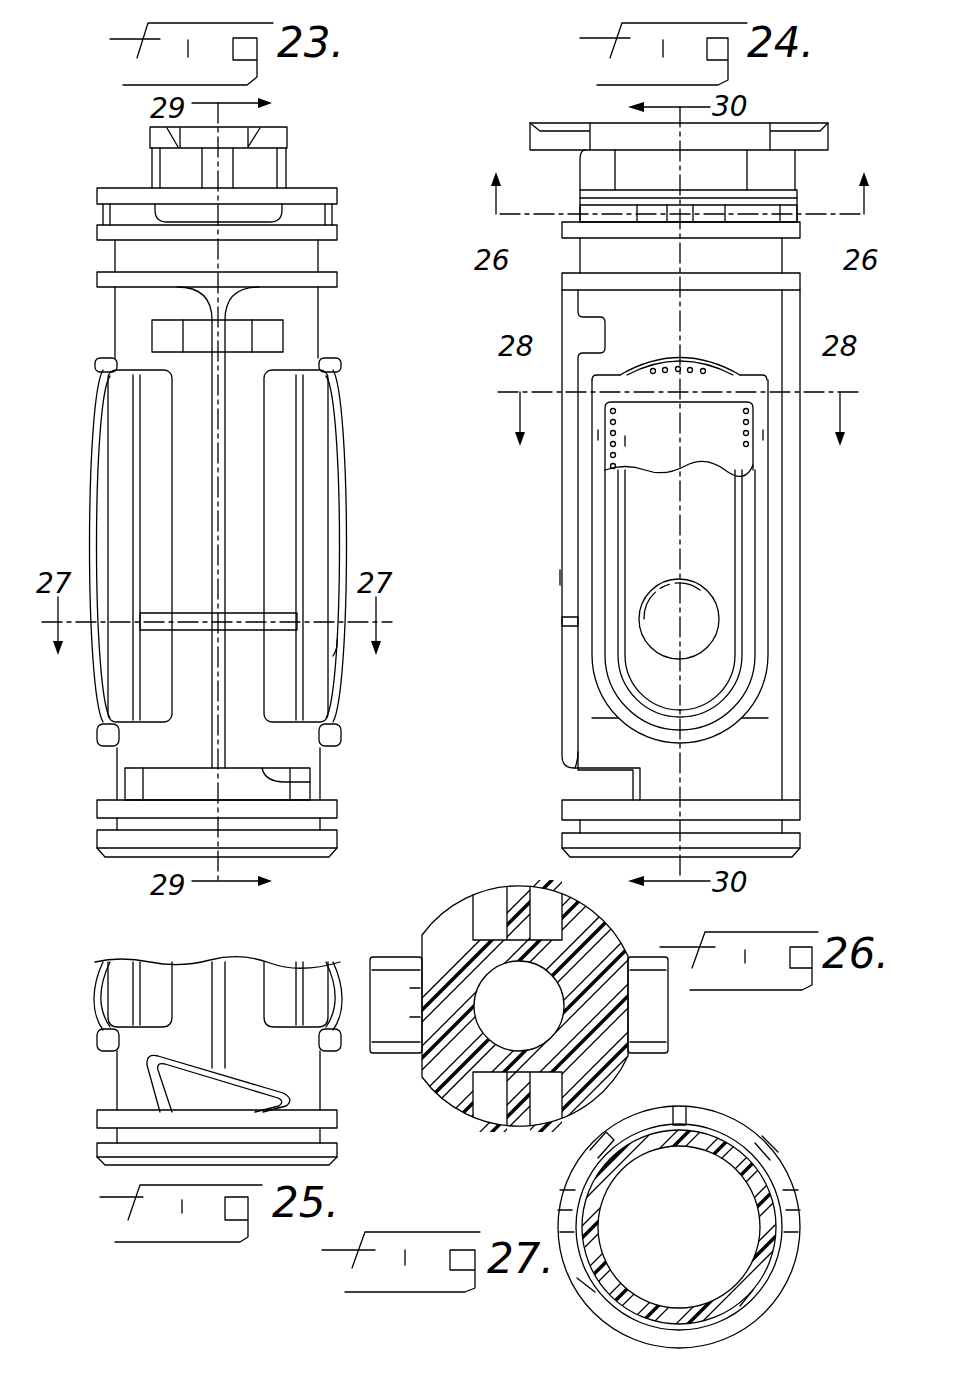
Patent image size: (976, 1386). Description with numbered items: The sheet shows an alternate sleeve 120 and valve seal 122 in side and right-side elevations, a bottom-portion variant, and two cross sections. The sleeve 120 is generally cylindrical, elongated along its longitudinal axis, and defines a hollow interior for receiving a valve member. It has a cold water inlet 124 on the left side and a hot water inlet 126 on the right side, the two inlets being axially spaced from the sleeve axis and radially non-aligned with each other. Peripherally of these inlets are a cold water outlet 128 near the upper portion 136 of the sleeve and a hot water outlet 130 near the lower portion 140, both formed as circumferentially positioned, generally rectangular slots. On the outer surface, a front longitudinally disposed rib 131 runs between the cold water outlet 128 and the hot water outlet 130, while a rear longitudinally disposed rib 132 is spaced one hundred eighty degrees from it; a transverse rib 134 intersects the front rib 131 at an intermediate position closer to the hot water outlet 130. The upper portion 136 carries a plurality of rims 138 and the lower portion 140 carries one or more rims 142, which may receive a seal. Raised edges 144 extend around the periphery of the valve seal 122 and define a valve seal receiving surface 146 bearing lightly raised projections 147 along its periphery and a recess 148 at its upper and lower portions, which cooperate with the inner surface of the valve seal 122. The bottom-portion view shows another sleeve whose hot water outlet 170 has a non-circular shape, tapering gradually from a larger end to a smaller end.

In FIG. 23, the sleeve 120 is at (104, 320).
In FIG. 24, the sleeve 120 is at (552, 697).
In FIG. 23, the valve seal 122 is at (345, 482).
In FIG. 24, the valve seal 122 is at (747, 553).
In FIG. 25, the valve seal 122 is at (116, 967).
In FIG. 23, the cold water inlet 124 is at (103, 460).
In FIG. 23, the hot water inlet 126 is at (337, 653).
In FIG. 24, the hot water inlet 126 is at (700, 637).
In FIG. 27, the hot water inlet 126 is at (757, 1273).
In FIG. 23, the cold water outlet 128 is at (225, 329).
In FIG. 24, the cold water outlet 128 is at (578, 321).
In FIG. 23, the hot water outlet 130 is at (267, 775).
In FIG. 24, the hot water outlet 130 is at (580, 802).
In FIG. 23, the front longitudinally disposed rib 131 is at (227, 468).
In FIG. 24, the front longitudinally disposed rib 131 is at (562, 577).
In FIG. 24, the rear longitudinally disposed rib 132 is at (802, 683).
In FIG. 27, the rear longitudinally disposed rib 132 is at (682, 1105).
In FIG. 23, the transverse rib 134 is at (197, 613).
In FIG. 24, the transverse rib 134 is at (563, 623).
In FIG. 27, the transverse rib 134 is at (627, 1337).
In FIG. 23, the upper portion 136 is at (299, 126).
In FIG. 24, the upper portion 136 is at (792, 116).
In FIG. 26, the upper portion 136 is at (406, 936).
In FIG. 23, the rims 138 is at (330, 280).
In FIG. 24, the rims 138 is at (800, 229).
In FIG. 26, the rims 138 is at (493, 886).
In FIG. 23, the lower portion 140 is at (112, 862).
In FIG. 24, the lower portion 140 is at (776, 860).
In FIG. 23, the rims 142 is at (97, 838).
In FIG. 24, the rims 142 is at (800, 834).
In FIG. 23, the raised edges 144 is at (102, 358).
In FIG. 24, the raised edges 144 is at (598, 430).
In FIG. 27, the raised edges 144 is at (600, 1137).
In FIG. 24, the valve seal receiving surface 146 is at (630, 438).
In FIG. 27, the valve seal receiving surface 146 is at (577, 1278).
In FIG. 24, the raised projections 147 is at (743, 438).
In FIG. 24, the recess 148 is at (727, 381).
In FIG. 25, the sleeve hot water outlet 170 is at (177, 1093).